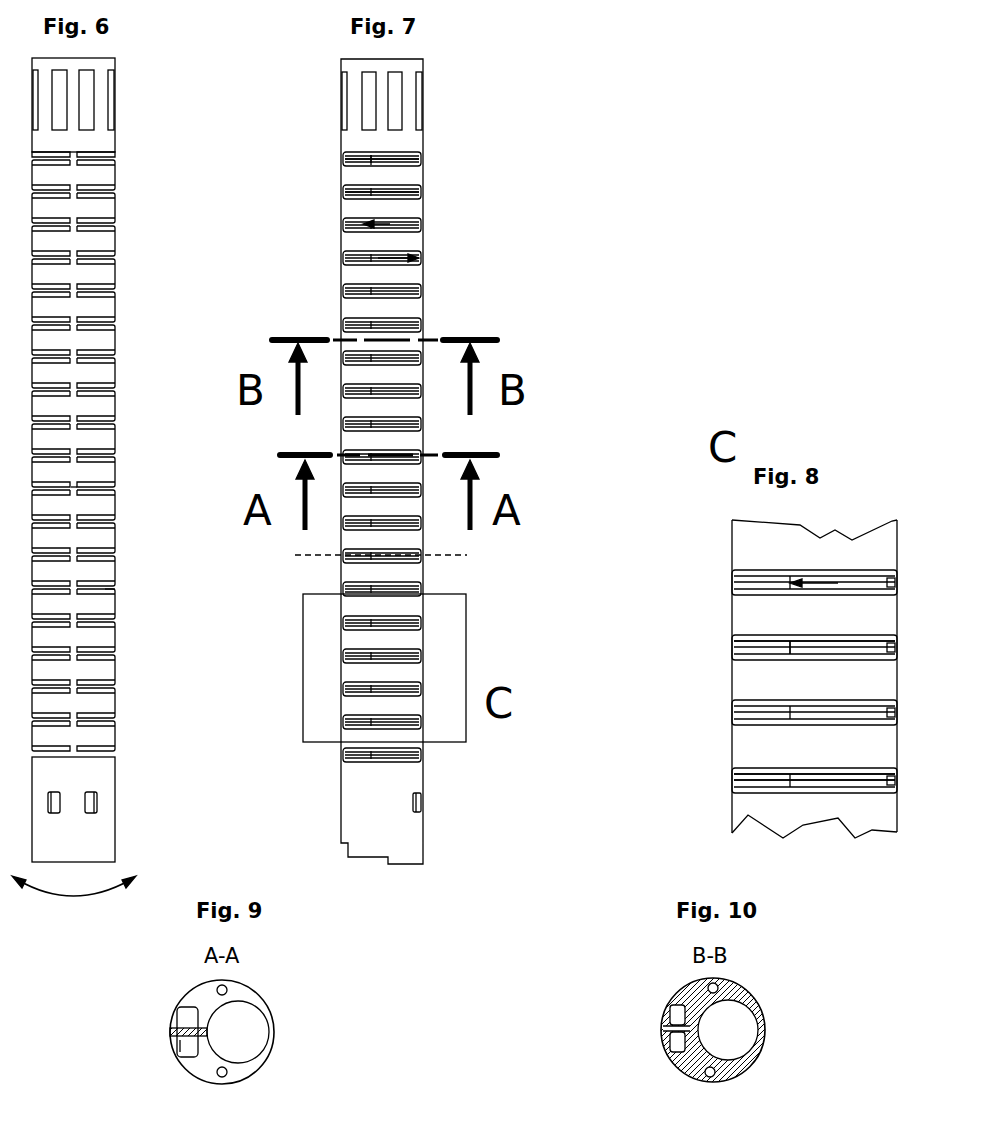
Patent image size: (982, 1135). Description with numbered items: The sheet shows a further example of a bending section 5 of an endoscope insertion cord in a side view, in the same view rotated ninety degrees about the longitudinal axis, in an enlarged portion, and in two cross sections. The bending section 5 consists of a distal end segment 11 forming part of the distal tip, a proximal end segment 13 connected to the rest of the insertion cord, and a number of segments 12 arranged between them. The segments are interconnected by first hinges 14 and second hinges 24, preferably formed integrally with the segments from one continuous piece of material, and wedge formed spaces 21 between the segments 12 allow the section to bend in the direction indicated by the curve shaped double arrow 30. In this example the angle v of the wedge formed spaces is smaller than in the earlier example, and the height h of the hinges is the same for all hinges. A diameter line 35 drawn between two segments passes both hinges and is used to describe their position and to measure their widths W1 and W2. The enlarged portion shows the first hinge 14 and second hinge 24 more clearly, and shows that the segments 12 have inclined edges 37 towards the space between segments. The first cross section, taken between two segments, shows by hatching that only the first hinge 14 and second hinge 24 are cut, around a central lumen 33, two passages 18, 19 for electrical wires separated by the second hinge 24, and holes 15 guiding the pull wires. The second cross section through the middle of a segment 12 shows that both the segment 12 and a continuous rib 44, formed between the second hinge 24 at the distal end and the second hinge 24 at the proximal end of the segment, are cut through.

In FIG. 7, the bending section 5 is at (504, 167).
In FIG. 6, the distal end segment 11 is at (116, 790).
In FIG. 7, the distal end segment 11 is at (425, 812).
In FIG. 6, the segment 12 is at (115, 207).
In FIG. 7, the segment 12 is at (423, 303).
In FIG. 8, the segment 12 is at (732, 691).
In FIG. 6, the proximal end segment 13 is at (115, 137).
In FIG. 7, the first hinge 14 is at (420, 190).
In FIG. 8, the first hinge 14 is at (852, 779).
In FIG. 9, the first hinge 14 is at (272, 1035).
In FIG. 9, the hole 15 is at (225, 1075).
In FIG. 10, the hole 15 is at (712, 1075).
In FIG. 9, the passage 18 is at (188, 1016).
In FIG. 10, the passage 18 is at (678, 1015).
In FIG. 9, the passage 19 is at (188, 1047).
In FIG. 10, the passage 19 is at (678, 1042).
In FIG. 6, the wedge formed space 21 is at (105, 589).
In FIG. 6, the second hinge 24 is at (75, 486).
In FIG. 7, the second hinge 24 is at (355, 158).
In FIG. 8, the second hinge 24 is at (752, 650).
In FIG. 9, the second hinge 24 is at (178, 1031).
In FIG. 6, the curve shaped double arrow 30 is at (72, 895).
In FIG. 7, the central lumen 33 is at (400, 157).
In FIG. 9, the central lumen 33 is at (250, 1030).
In FIG. 10, the central lumen 33 is at (740, 1030).
In FIG. 7, the diameter line 35 is at (467, 558).
In FIG. 8, the inclined edge 37 is at (750, 637).
In FIG. 10, the continuous rib 44 is at (668, 1028).
In FIG. 6, the height of the hinges h is at (12, 455).
In FIG. 6, the angle of the wedge formed spaces v is at (121, 689).
In FIG. 7, the width W1 is at (434, 258).
In FIG. 8, the width W1 is at (845, 645).
In FIG. 7, the width W2 is at (332, 225).
In FIG. 8, the width W2 is at (722, 582).